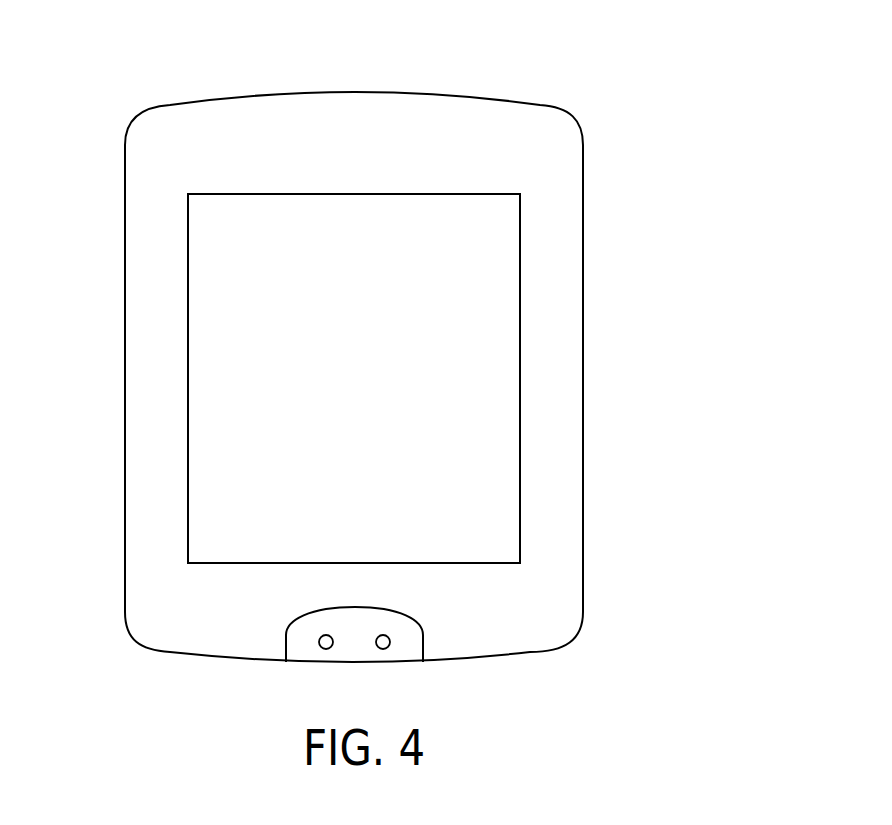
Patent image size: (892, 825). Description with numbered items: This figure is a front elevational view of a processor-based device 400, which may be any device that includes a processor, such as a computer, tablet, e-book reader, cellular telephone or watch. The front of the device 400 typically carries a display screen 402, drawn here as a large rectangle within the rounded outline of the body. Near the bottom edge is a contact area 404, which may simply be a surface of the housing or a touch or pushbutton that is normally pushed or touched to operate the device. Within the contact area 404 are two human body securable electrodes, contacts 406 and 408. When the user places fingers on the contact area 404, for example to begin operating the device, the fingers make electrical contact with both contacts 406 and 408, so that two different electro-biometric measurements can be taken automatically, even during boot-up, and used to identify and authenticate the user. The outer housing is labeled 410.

The processor-based device 400 is at (627, 100).
The display screen 402 is at (498, 262).
The contact area 404 is at (409, 620).
The contact 406 is at (320, 649).
The contact 408 is at (390, 650).
The housing 410 is at (153, 374).